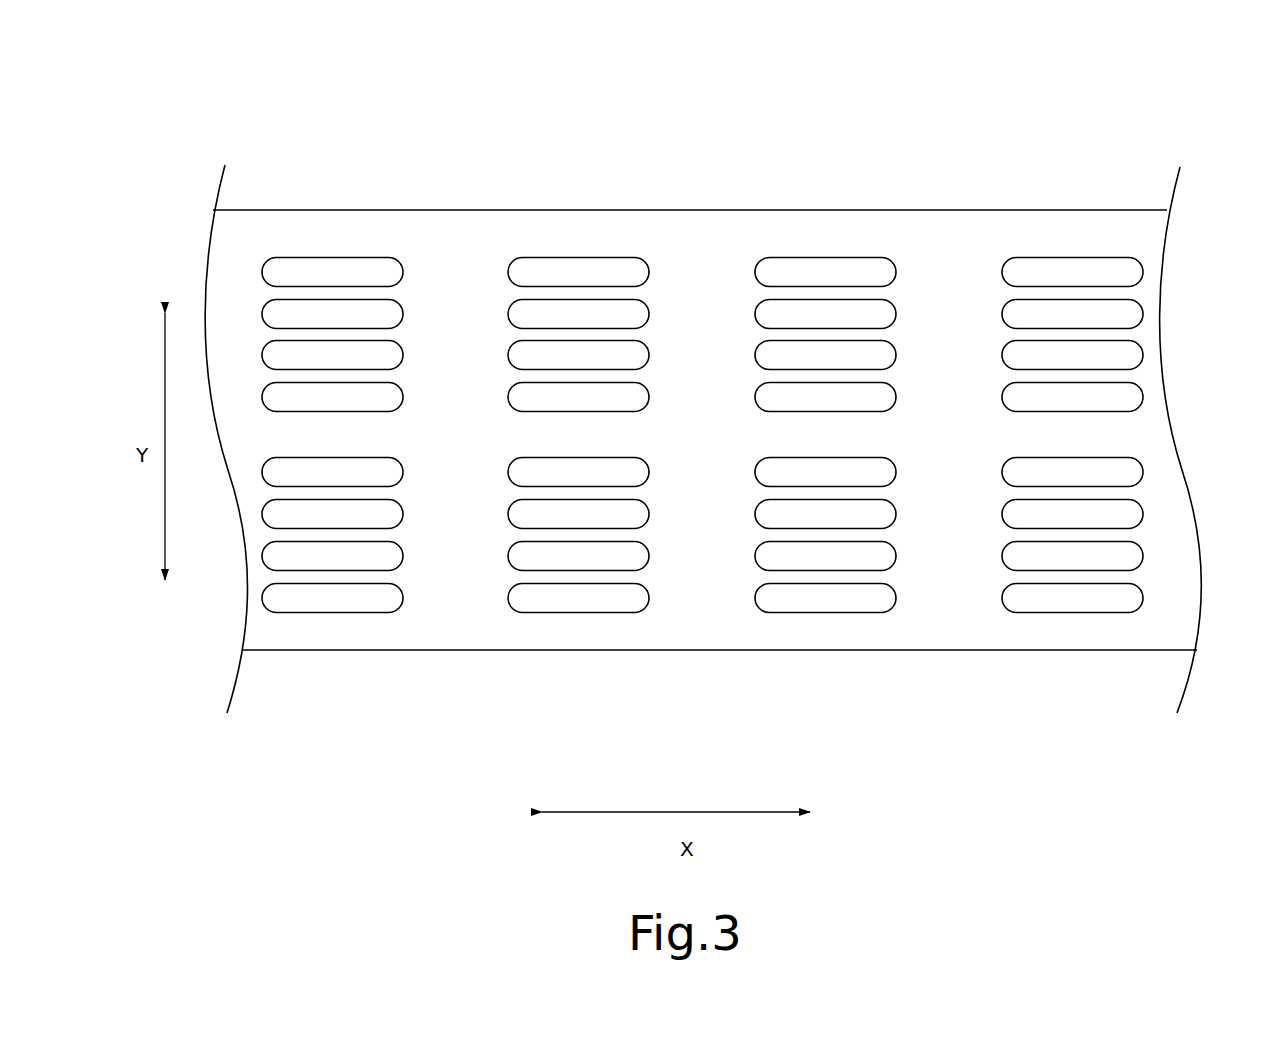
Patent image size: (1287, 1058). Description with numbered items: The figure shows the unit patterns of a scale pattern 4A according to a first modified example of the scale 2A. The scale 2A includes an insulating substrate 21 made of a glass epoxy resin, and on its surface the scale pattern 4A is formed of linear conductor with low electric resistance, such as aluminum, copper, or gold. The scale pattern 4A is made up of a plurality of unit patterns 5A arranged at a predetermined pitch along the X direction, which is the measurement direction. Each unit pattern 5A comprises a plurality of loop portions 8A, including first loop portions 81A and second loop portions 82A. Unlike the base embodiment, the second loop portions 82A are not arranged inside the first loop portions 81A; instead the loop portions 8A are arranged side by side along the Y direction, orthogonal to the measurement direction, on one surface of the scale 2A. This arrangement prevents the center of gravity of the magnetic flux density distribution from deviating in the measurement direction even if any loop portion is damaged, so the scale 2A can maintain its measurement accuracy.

The scale 2A is at (1162, 128).
The scale pattern 4A is at (1177, 343).
The insulating substrate 21 is at (987, 638).
The unit patterns 5A is at (314, 246).
The loop portions 8A is at (702, 423).
The first loop portions 81A is at (464, 258).
The second loop portions 82A is at (464, 300).